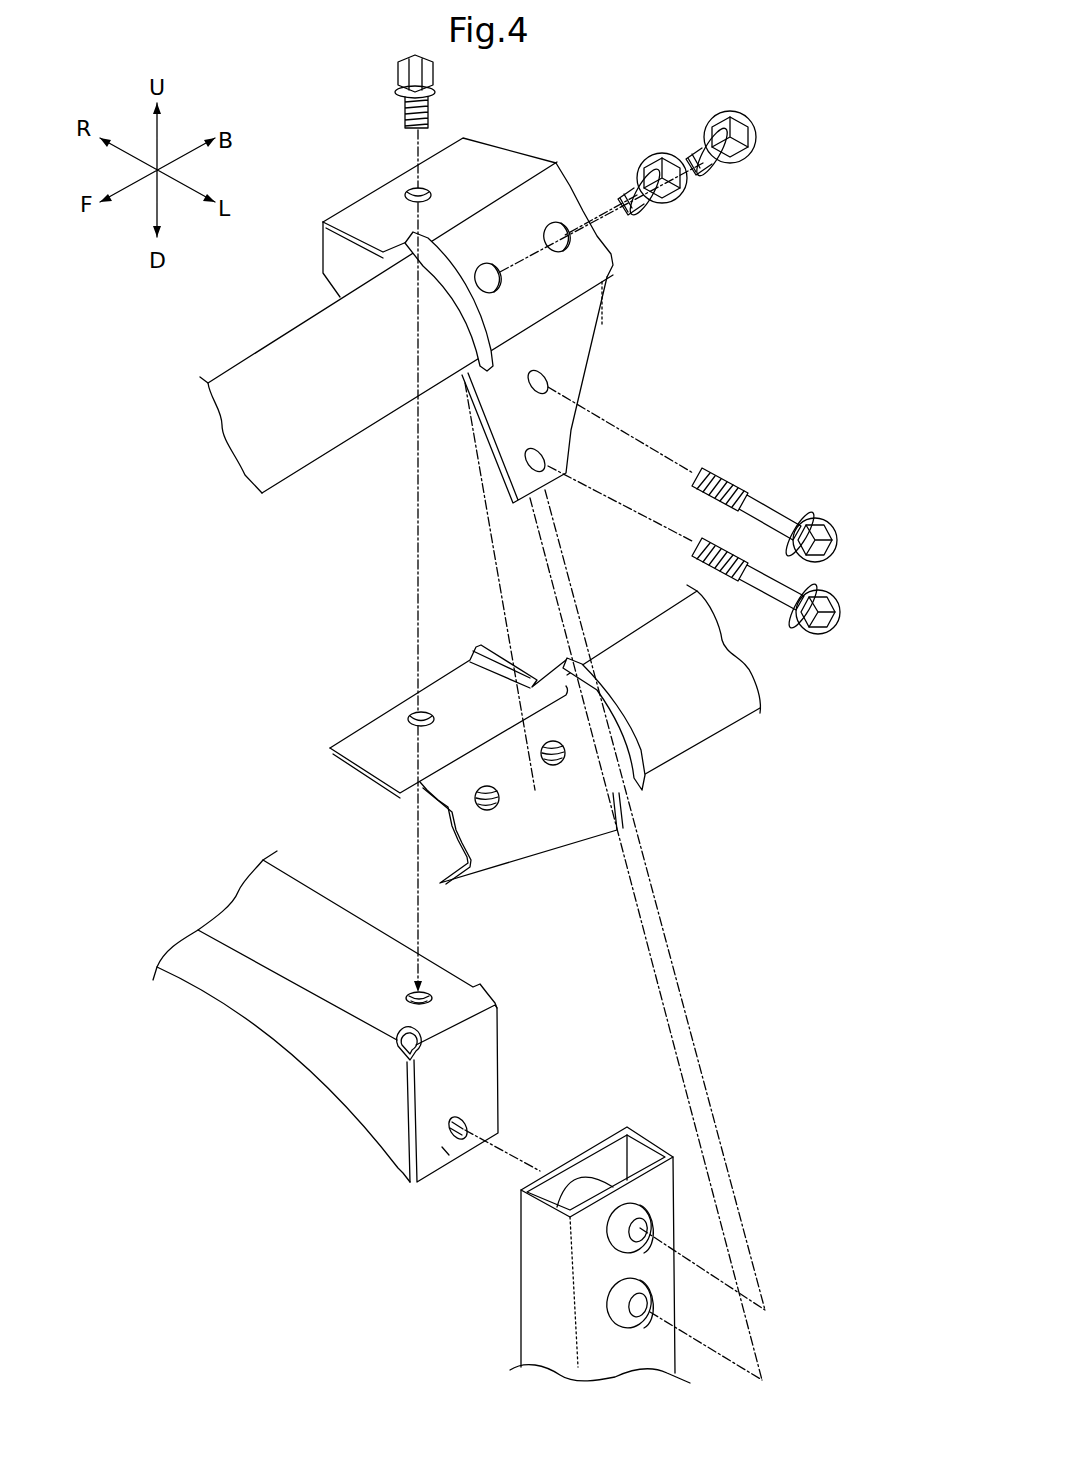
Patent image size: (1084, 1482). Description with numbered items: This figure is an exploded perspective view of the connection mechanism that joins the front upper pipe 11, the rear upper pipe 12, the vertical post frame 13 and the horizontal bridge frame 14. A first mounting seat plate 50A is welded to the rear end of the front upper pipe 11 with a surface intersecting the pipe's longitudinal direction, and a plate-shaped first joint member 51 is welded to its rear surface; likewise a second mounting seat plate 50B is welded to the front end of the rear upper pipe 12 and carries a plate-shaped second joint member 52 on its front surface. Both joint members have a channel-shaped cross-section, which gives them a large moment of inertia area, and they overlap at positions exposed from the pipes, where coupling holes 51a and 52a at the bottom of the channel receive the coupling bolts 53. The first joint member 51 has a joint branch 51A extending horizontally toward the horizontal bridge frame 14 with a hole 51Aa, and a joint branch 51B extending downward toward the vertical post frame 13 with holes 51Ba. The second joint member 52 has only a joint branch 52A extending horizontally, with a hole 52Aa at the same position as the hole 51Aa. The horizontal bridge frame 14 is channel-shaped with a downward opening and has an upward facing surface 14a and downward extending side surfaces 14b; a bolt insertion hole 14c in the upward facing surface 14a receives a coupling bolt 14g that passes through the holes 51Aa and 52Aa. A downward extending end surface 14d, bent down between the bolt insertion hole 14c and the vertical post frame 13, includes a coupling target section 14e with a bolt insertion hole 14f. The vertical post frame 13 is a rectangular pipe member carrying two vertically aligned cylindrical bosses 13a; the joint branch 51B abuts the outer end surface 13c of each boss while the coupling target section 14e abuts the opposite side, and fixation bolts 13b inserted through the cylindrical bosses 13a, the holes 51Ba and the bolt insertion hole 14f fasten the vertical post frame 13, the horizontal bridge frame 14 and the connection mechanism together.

The front upper pipe 11 is at (302, 485).
The rear upper pipe 12 is at (718, 718).
The vertical post frame 13 is at (508, 1306).
The cylindrical boss 13a is at (578, 1180).
The fixation bolt 13b is at (828, 610).
The outer end surface 13c is at (647, 1290).
The horizontal bridge frame 14 is at (317, 1097).
The upward facing surface 14a is at (323, 928).
The downward extending side surface 14b is at (277, 1020).
The bolt insertion hole 14c is at (414, 990).
The downward extending end surface 14d is at (473, 1058).
The coupling target section 14e is at (442, 1147).
The bolt insertion hole 14f is at (464, 1118).
The coupling bolt 14g is at (432, 65).
The first mounting seat plate 50A is at (447, 290).
The second mounting seat plate 50B is at (642, 757).
The first joint member 51 is at (560, 145).
The joint branch 51A is at (370, 208).
The hole 51Aa is at (412, 188).
The coupling hole 51a is at (498, 285).
The joint branch 51B is at (578, 357).
The hole 51Ba is at (540, 390).
The second joint member 52 is at (330, 700).
The joint branch 52A is at (353, 747).
The hole 52Aa is at (414, 712).
The coupling hole 52a is at (495, 806).
The coupling bolt 53 is at (740, 140).